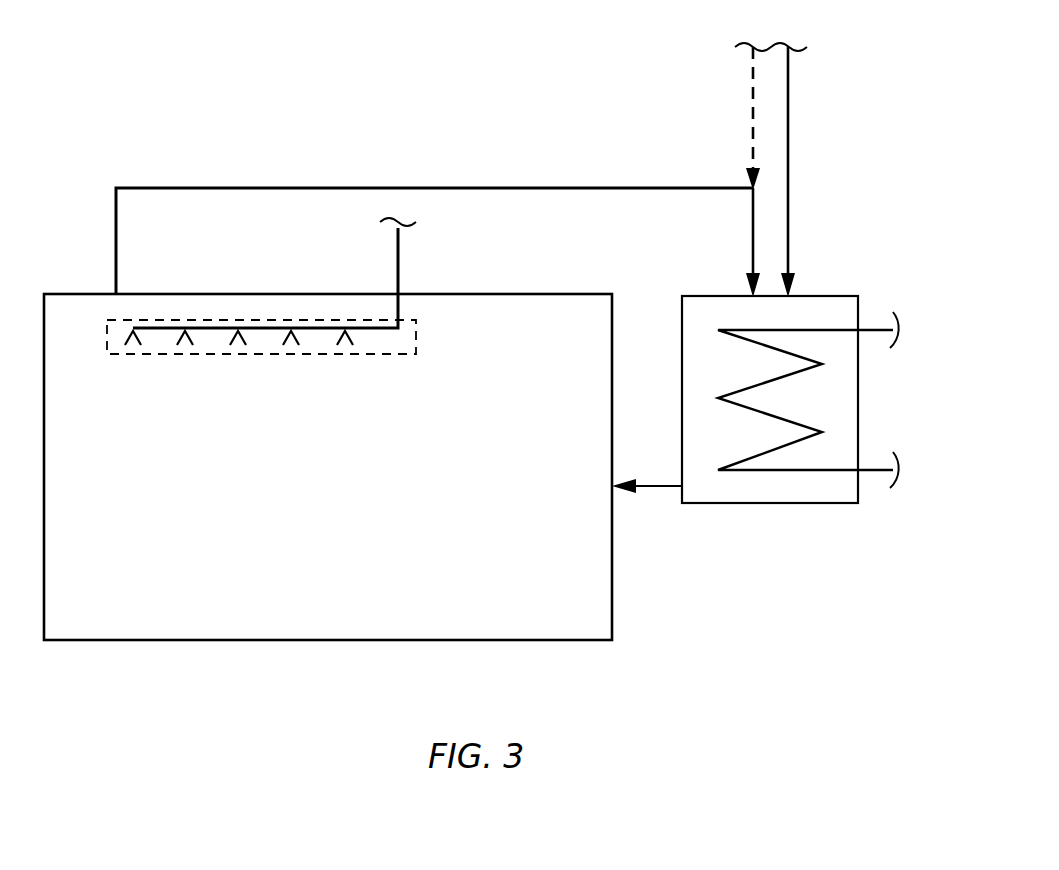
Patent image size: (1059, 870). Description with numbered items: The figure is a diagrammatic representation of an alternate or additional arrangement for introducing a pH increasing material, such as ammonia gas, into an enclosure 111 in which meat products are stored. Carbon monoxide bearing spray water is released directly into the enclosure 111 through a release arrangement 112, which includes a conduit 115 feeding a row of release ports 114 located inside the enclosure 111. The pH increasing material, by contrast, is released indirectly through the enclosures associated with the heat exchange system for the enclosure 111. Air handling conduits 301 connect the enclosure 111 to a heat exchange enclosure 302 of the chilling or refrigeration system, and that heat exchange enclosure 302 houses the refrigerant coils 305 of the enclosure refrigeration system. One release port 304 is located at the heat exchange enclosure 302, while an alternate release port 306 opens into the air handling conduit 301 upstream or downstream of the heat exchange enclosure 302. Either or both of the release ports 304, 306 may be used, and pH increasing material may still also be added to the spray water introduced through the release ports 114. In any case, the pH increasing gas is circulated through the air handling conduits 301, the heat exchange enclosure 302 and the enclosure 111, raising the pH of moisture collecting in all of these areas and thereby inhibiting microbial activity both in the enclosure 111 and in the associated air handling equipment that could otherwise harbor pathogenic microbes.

The enclosure 111 is at (134, 609).
The release arrangement 112 is at (402, 356).
The release ports 114 is at (238, 348).
The conduit 115 is at (322, 332).
The air handling conduits 301 is at (273, 188).
The heat exchange enclosure 302 is at (708, 294).
The release port 304 is at (792, 292).
The refrigerant coils 305 is at (788, 472).
The alternate release port 306 is at (751, 186).